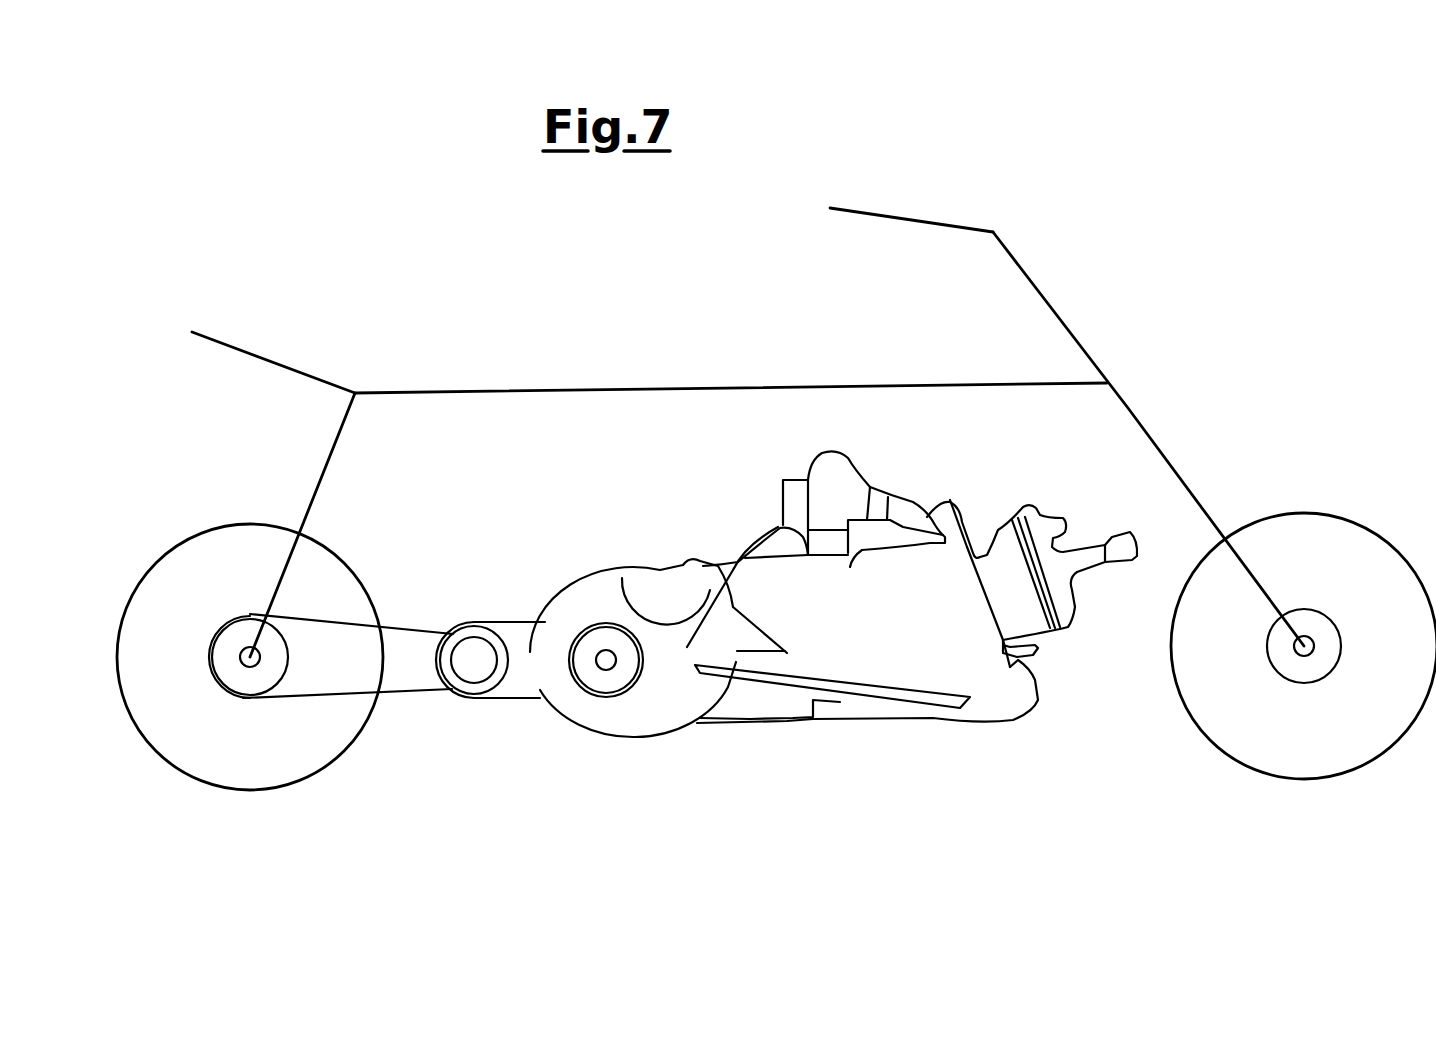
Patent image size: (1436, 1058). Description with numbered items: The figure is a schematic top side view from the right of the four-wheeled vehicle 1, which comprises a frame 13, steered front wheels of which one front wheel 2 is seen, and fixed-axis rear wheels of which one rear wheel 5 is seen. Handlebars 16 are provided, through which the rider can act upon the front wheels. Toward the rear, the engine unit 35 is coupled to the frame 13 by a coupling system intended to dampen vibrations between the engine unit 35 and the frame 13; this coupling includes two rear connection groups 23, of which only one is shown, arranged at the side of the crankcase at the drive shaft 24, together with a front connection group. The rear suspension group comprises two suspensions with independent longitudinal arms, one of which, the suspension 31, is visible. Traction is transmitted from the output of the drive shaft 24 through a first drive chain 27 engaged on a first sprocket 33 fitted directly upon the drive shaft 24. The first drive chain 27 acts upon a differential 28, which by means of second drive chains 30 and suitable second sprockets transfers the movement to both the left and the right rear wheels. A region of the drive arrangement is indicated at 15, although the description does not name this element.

The four-wheeled vehicle 1 is at (630, 285).
The front wheel 2 is at (1273, 743).
The rear wheel 5 is at (228, 547).
The frame 13 is at (1128, 400).
The drive unit 15 is at (486, 589).
The handlebars 16 is at (940, 222).
The rear connection group 23 is at (627, 710).
The drive shaft 24 is at (617, 653).
The first drive chain 27 is at (528, 726).
The differential 28 is at (448, 676).
The second drive chain 30 is at (400, 628).
The suspension 31 is at (326, 470).
The first sprocket 33 is at (594, 638).
The engine unit 35 is at (854, 738).